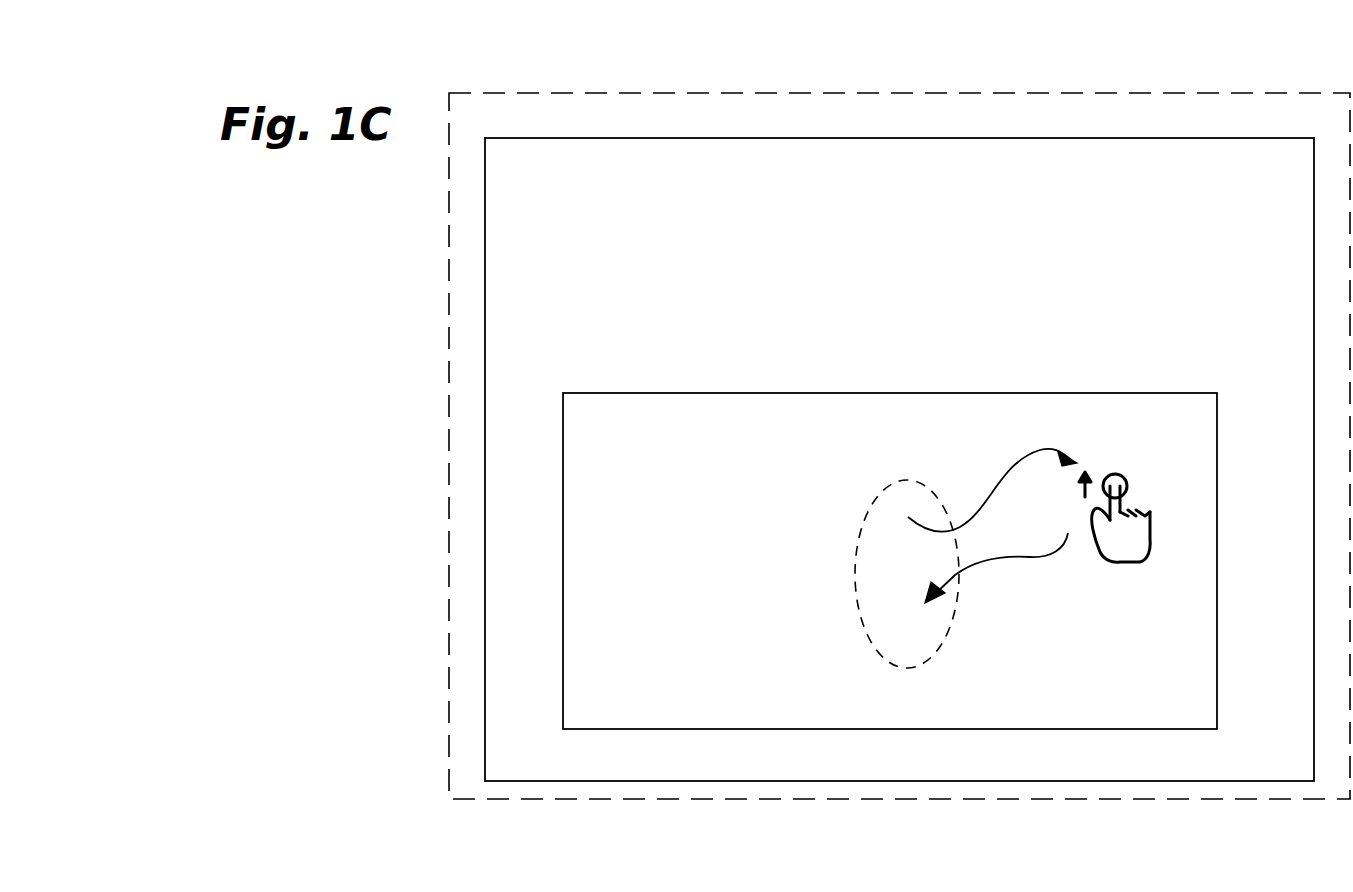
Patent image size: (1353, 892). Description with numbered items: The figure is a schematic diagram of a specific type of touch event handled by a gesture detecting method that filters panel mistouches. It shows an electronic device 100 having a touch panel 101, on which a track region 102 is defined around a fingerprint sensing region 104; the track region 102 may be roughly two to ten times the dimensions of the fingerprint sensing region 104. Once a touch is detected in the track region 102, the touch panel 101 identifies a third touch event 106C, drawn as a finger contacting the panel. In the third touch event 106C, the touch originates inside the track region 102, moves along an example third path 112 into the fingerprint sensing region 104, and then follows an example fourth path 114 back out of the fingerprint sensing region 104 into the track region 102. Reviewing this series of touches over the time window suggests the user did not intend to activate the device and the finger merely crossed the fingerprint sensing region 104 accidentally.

The electronic device 100 is at (645, 93).
The touch panel 101 is at (787, 138).
The track region 102 is at (680, 393).
The fingerprint sensing region 104 is at (888, 491).
The third touch event 106C is at (1155, 512).
The third path 112 is at (1037, 560).
The fourth path 114 is at (1018, 460).